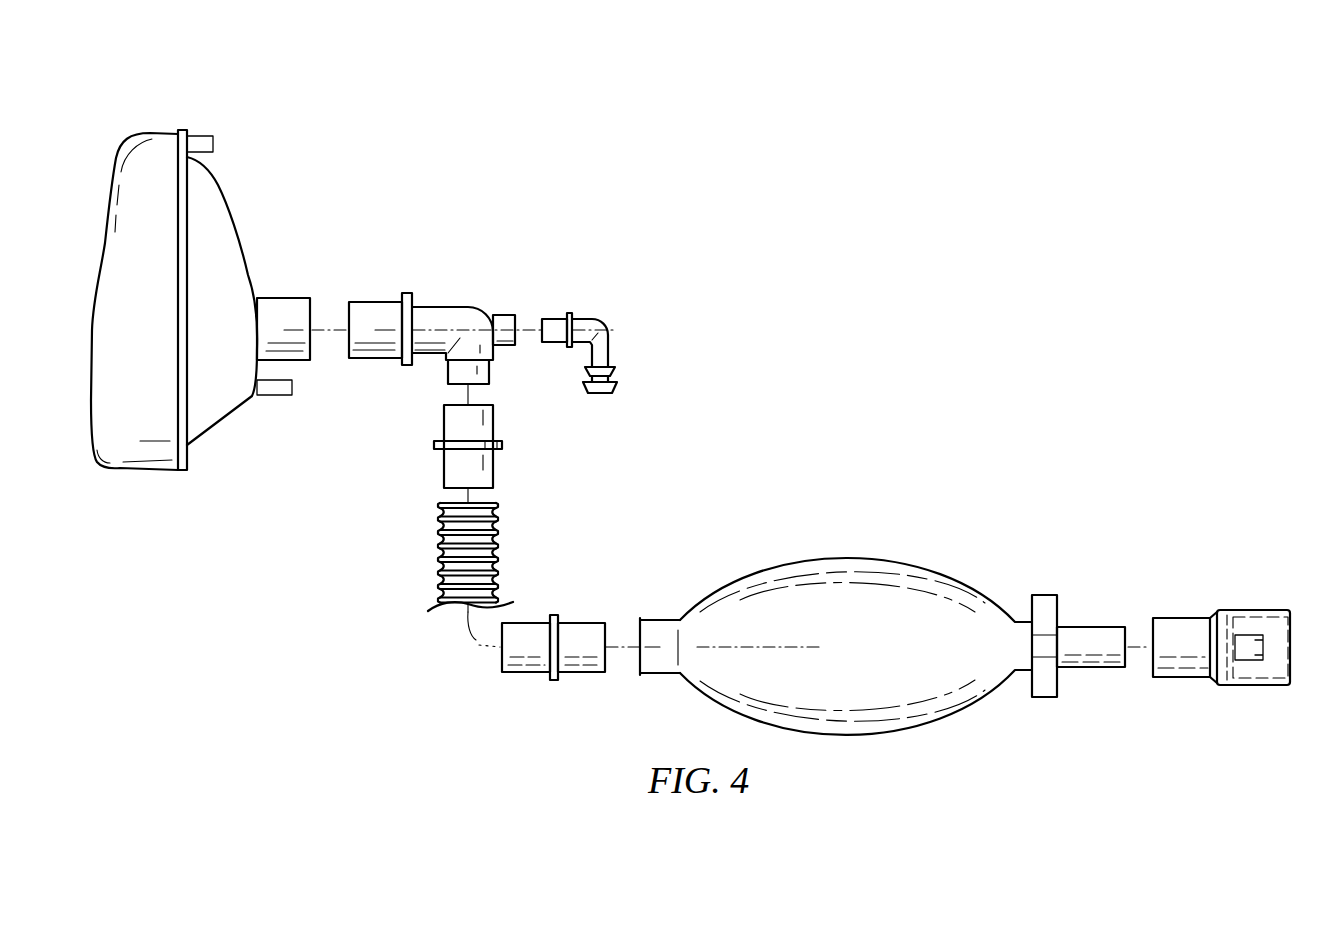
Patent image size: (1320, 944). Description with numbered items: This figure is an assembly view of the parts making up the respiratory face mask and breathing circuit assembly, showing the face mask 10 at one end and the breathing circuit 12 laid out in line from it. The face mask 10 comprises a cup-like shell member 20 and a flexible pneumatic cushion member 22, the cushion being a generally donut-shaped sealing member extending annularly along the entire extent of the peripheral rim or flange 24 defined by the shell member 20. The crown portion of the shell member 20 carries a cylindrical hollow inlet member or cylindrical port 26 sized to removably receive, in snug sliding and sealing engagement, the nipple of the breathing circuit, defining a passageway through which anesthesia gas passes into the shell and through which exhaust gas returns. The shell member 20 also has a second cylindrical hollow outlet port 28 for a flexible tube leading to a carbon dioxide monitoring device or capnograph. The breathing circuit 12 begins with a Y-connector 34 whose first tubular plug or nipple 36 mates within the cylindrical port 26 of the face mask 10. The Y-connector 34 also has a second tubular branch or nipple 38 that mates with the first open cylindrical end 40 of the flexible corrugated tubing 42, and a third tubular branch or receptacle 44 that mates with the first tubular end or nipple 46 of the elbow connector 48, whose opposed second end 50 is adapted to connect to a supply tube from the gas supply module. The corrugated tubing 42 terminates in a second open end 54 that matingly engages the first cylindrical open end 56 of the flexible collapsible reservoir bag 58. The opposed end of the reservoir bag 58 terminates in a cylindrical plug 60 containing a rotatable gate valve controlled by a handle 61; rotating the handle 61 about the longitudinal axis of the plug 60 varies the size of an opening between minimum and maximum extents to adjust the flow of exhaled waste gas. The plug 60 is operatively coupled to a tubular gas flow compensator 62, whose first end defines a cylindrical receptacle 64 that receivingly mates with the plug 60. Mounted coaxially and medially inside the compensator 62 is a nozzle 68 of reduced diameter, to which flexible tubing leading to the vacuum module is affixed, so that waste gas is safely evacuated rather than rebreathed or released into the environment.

The face mask 10 is at (253, 300).
The breathing circuit 12 is at (909, 621).
The shell member 20 is at (238, 309).
The flexible pneumatic cushion member 22 is at (186, 301).
The peripheral rim or flange 24 is at (214, 300).
The cylindrical port 26 is at (302, 304).
The port 28 is at (295, 404).
The Y-connector 34 is at (507, 321).
The first tubular plug or nipple 36 is at (371, 316).
The second tubular branch or nipple 38 is at (498, 372).
The first open cylindrical end 40 is at (444, 446).
The flexible corrugated tubing 42 is at (438, 557).
The third tubular branch or receptacle 44 is at (525, 314).
The first tubular end or nipple 46 is at (577, 314).
The elbow connector 48 is at (628, 325).
The second end 50 is at (634, 383).
The second open end 54 is at (574, 629).
The first cylindrical open end 56 is at (623, 668).
The reservoir bag 58 is at (856, 631).
The cylindrical plug 60 is at (1107, 671).
The handle 61 is at (1069, 631).
The gas flow compensator 62 is at (1244, 652).
The cylindrical receptacle 64 is at (1167, 633).
The nozzle 68 is at (1276, 618).